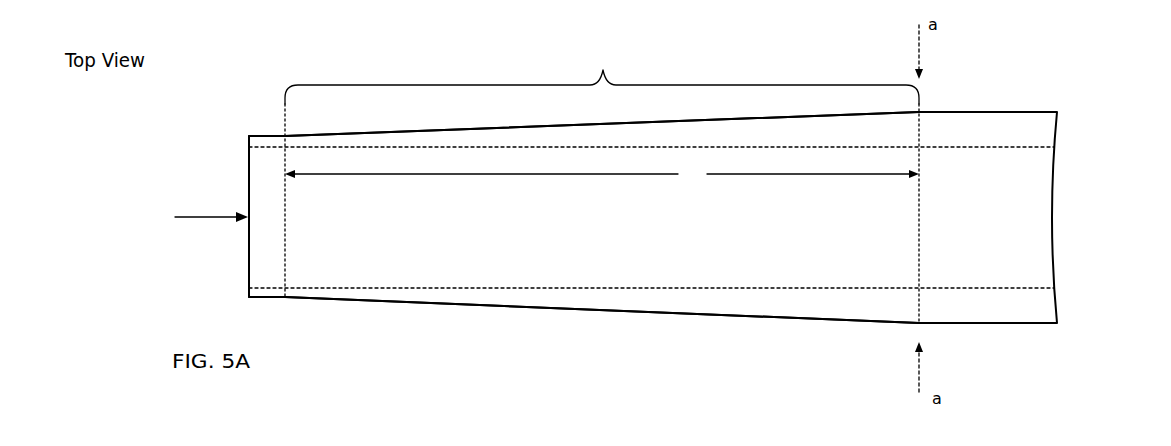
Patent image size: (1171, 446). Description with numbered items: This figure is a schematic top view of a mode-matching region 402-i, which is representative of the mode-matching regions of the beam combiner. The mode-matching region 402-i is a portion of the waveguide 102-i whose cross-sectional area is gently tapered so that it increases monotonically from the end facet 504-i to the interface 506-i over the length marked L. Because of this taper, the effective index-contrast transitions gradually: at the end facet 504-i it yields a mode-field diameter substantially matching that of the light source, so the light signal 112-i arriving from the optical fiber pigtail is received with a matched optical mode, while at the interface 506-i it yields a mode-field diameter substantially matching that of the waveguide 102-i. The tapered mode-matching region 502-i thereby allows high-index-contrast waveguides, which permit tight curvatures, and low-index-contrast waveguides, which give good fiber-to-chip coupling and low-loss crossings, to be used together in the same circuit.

The waveguide 102-i is at (1033, 190).
The mode-matching region 402-i is at (232, 28).
The end facet 504-i is at (218, 168).
The mode-matching region 502-i is at (602, 181).
The interface 506-i is at (919, 218).
The light signal 112-i is at (211, 218).